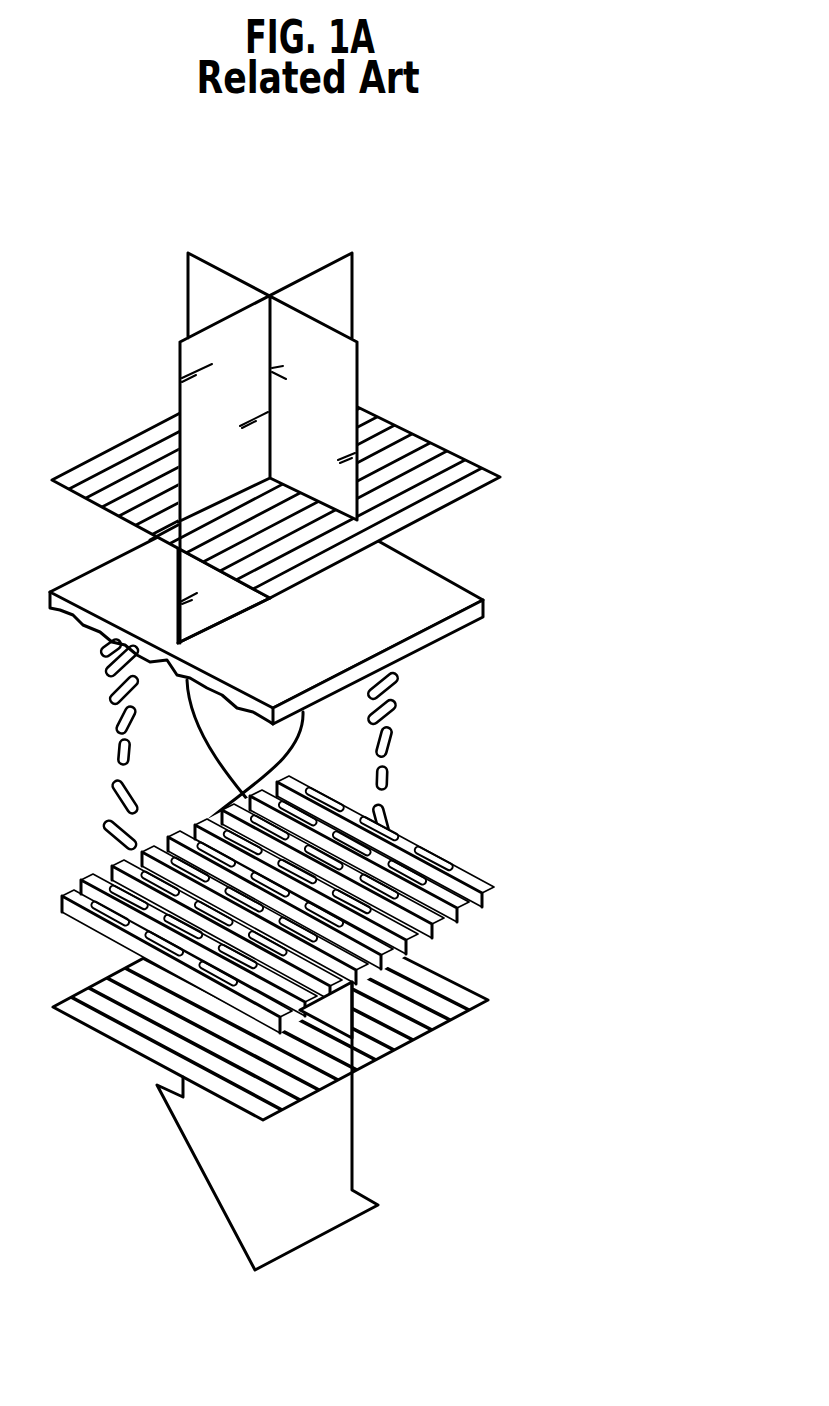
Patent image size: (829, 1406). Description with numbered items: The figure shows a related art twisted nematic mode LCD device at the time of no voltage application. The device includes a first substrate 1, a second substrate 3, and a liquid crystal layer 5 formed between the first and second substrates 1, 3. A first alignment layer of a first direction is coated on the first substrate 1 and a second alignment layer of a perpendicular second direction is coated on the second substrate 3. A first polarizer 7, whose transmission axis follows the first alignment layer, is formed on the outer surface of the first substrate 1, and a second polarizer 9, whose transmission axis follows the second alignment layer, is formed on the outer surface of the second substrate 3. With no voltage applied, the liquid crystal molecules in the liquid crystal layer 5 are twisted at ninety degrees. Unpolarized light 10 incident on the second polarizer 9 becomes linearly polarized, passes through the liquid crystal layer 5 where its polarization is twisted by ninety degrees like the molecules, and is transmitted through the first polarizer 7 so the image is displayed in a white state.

The first substrate 1 is at (448, 870).
The second substrate 3 is at (432, 578).
The liquid crystal layer 5 is at (388, 778).
The first polarizer 7 is at (432, 1033).
The second polarizer 9 is at (425, 435).
The unpolarized light 10 is at (338, 307).